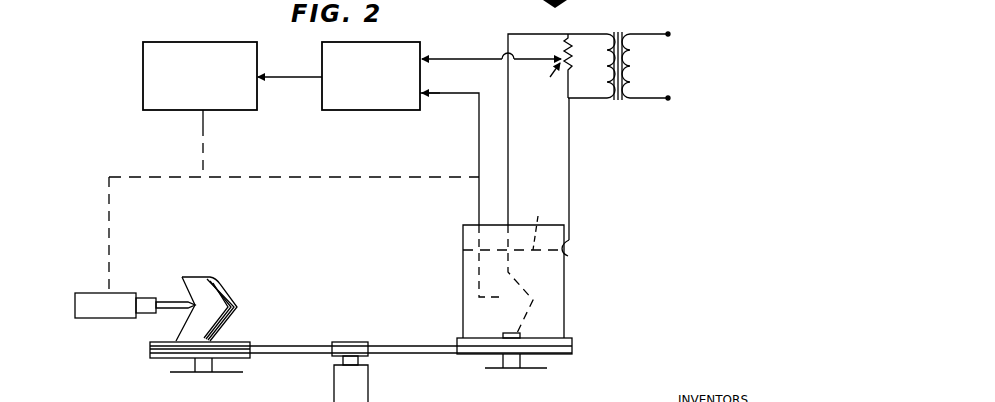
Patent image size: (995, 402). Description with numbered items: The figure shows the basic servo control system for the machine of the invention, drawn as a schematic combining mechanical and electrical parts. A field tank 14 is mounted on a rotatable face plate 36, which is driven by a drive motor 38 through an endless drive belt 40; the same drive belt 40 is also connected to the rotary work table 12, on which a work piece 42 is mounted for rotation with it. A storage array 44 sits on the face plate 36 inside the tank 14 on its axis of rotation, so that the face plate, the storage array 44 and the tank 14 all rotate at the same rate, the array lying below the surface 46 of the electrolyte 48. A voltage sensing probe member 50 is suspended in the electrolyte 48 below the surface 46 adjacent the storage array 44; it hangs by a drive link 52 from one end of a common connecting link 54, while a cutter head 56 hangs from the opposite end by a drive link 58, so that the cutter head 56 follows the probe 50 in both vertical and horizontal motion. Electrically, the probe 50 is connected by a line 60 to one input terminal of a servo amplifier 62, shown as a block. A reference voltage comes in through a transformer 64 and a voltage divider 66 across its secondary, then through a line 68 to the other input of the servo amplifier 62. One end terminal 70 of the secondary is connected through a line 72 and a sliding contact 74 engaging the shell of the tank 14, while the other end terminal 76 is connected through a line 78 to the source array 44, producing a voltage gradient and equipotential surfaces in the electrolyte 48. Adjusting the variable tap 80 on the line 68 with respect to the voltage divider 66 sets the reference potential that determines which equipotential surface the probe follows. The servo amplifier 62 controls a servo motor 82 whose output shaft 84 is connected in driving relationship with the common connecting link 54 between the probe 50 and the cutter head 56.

The rotary work table 12 is at (173, 341).
The field tank 14 is at (564, 320).
The rotatable face plate 36 is at (572, 341).
The drive motor 38 is at (362, 385).
The endless drive belt 40 is at (394, 346).
The work piece 42 is at (238, 307).
The storage array 44 is at (533, 300).
The surface of the electrolyte 46 is at (534, 225).
The electrolyte 48 is at (478, 320).
The voltage sensing probe member 50 is at (478, 285).
The drive link 52 is at (479, 207).
The common connecting link 54 is at (333, 177).
The cutter head 56 is at (80, 306).
The drive link 58 is at (109, 221).
The line 60 is at (479, 139).
The servo amplifier 62 is at (381, 69).
The transformer 64 is at (617, 36).
The voltage divider 66 is at (565, 46).
The line 68 is at (458, 59).
The end terminal 70 is at (569, 98).
The line 72 is at (569, 135).
The sliding contact 74 is at (569, 247).
The end terminal 76 is at (569, 38).
The line 78 is at (508, 135).
The variable tap 80 is at (543, 76).
The servo motor 82 is at (209, 69).
The output shaft 84 is at (203, 141).